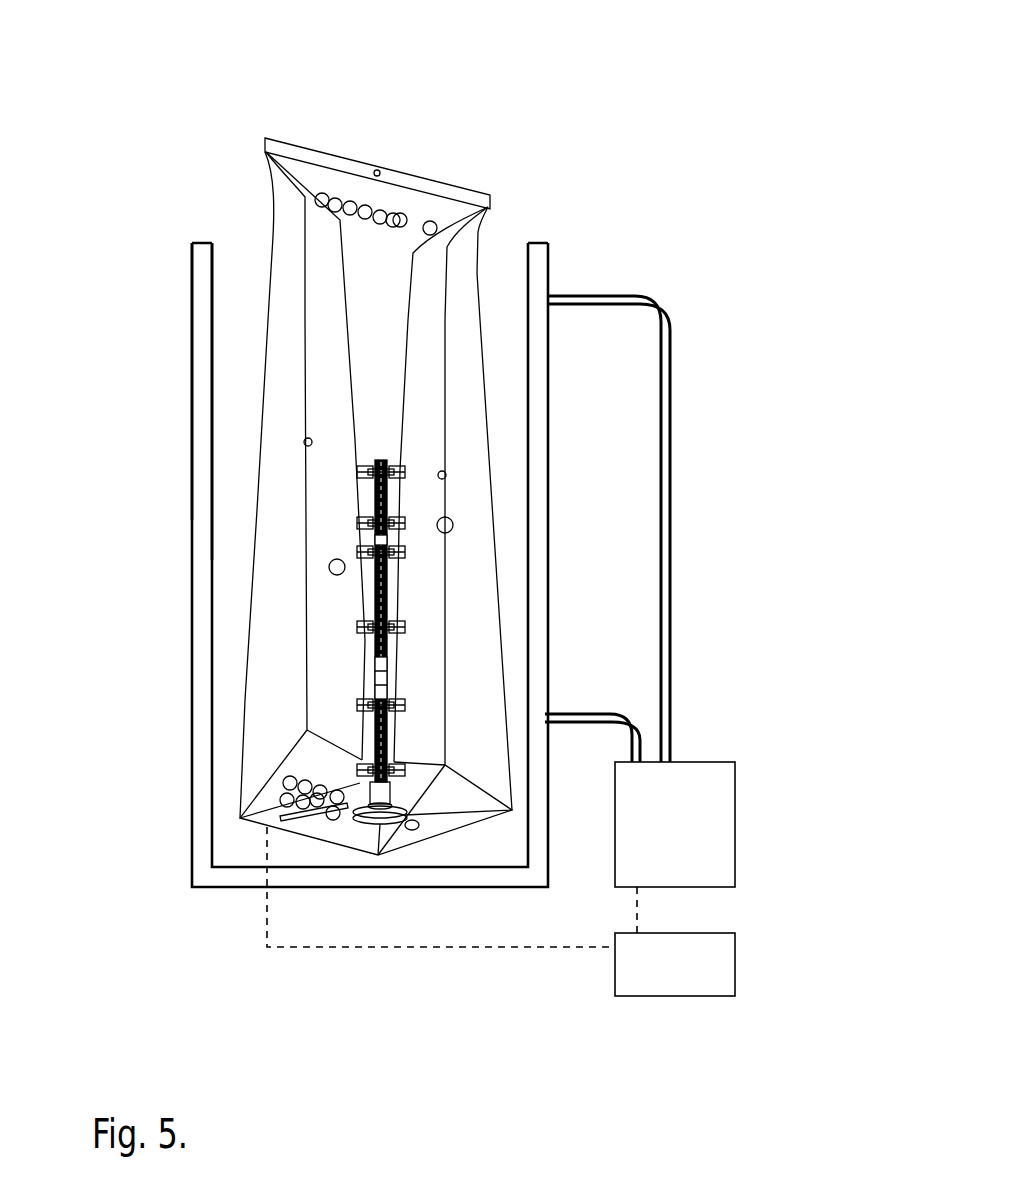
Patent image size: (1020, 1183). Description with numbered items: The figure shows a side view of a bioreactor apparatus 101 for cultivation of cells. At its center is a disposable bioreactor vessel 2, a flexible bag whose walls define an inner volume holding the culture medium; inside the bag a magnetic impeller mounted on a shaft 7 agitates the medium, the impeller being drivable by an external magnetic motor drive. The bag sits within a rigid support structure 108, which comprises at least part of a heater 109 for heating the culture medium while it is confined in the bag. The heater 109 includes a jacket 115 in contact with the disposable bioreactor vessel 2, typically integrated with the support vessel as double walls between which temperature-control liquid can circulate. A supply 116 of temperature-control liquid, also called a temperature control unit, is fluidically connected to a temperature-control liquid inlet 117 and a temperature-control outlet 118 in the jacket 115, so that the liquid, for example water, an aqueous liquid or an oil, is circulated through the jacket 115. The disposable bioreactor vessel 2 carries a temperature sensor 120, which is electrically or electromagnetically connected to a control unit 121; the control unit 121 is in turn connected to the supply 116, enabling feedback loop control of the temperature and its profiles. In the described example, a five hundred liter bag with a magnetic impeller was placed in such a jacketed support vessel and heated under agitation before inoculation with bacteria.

The bioreactor apparatus 101 is at (411, 85).
The disposable bioreactor vessel 2 is at (270, 260).
The agitator shaft with impellers 7 is at (360, 622).
The support structure 108 is at (193, 760).
The heater 109 is at (200, 493).
The jacket 115 is at (200, 423).
The supply of temperature-control liquid 116 is at (735, 845).
The temperature-control liquid inlet 117 is at (560, 712).
The temperature-control outlet 118 is at (548, 298).
The temperature sensor 120 is at (275, 822).
The control unit 121 is at (735, 963).